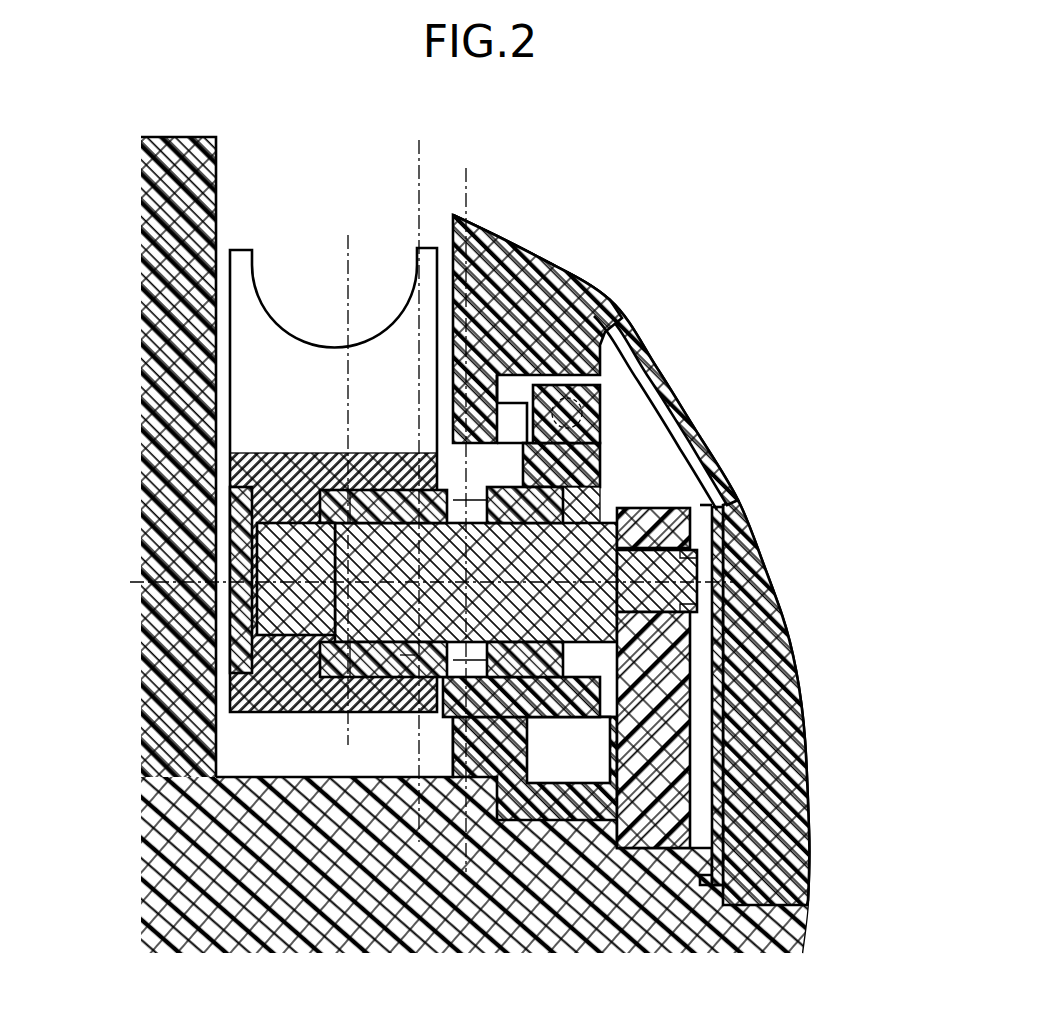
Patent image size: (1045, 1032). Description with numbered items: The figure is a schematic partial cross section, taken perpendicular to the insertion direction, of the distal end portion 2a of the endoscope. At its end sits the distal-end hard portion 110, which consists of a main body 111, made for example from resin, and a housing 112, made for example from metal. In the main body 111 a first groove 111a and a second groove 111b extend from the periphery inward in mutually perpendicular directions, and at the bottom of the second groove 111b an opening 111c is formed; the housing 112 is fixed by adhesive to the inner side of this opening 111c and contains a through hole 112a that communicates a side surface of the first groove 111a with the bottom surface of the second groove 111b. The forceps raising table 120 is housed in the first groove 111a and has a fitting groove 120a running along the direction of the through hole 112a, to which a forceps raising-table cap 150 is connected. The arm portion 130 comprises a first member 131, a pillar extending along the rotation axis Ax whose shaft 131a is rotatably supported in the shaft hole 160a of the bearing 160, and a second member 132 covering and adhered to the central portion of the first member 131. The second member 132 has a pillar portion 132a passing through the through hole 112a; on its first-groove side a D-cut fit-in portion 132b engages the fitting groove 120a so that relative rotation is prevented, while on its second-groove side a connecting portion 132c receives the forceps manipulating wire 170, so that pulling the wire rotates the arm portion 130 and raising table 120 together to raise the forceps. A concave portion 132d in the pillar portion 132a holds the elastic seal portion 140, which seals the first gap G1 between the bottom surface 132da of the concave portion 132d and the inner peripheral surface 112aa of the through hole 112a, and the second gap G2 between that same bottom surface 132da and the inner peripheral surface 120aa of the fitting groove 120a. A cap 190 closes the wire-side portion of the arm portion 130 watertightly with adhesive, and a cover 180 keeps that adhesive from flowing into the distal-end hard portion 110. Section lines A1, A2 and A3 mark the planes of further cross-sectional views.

The distal end portion 2a is at (577, 158).
The distal-end hard portion 110 is at (528, 522).
The main body 111 is at (549, 274).
The first groove 111a is at (318, 195).
The second groove 111b is at (708, 507).
The opening 111c is at (515, 398).
The housing 112 is at (679, 459).
The through hole 112a is at (612, 492).
The inner peripheral surface 112aa is at (468, 496).
The forceps raising table 120 is at (240, 250).
The fitting groove 120a is at (284, 553).
The inner peripheral surface 120aa is at (395, 495).
The arm portion 130 is at (465, 623).
The first member 131 is at (495, 540).
The shaft 131a is at (690, 550).
The second member 132 is at (453, 623).
The pillar portion 132a is at (365, 495).
The fit-in portion 132b is at (382, 497).
The connecting portion 132c is at (558, 487).
The concave portion 132d is at (405, 495).
The bottom surface 132da is at (452, 535).
The seal portion 140 is at (478, 506).
The forceps raising-table cap 150 is at (222, 573).
The bearing 160 is at (750, 678).
The shaft hole 160a is at (690, 606).
The forceps manipulating wire 170 is at (582, 410).
The cover 180 is at (720, 517).
The cap 190 is at (652, 362).
The line A1- A1 is at (392, 240).
The line A2- A2 is at (469, 177).
The line A3- A3 is at (422, 148).
The rotation axis Ax is at (295, 582).
The first gap G1 is at (455, 495).
The second gap G2 is at (405, 660).